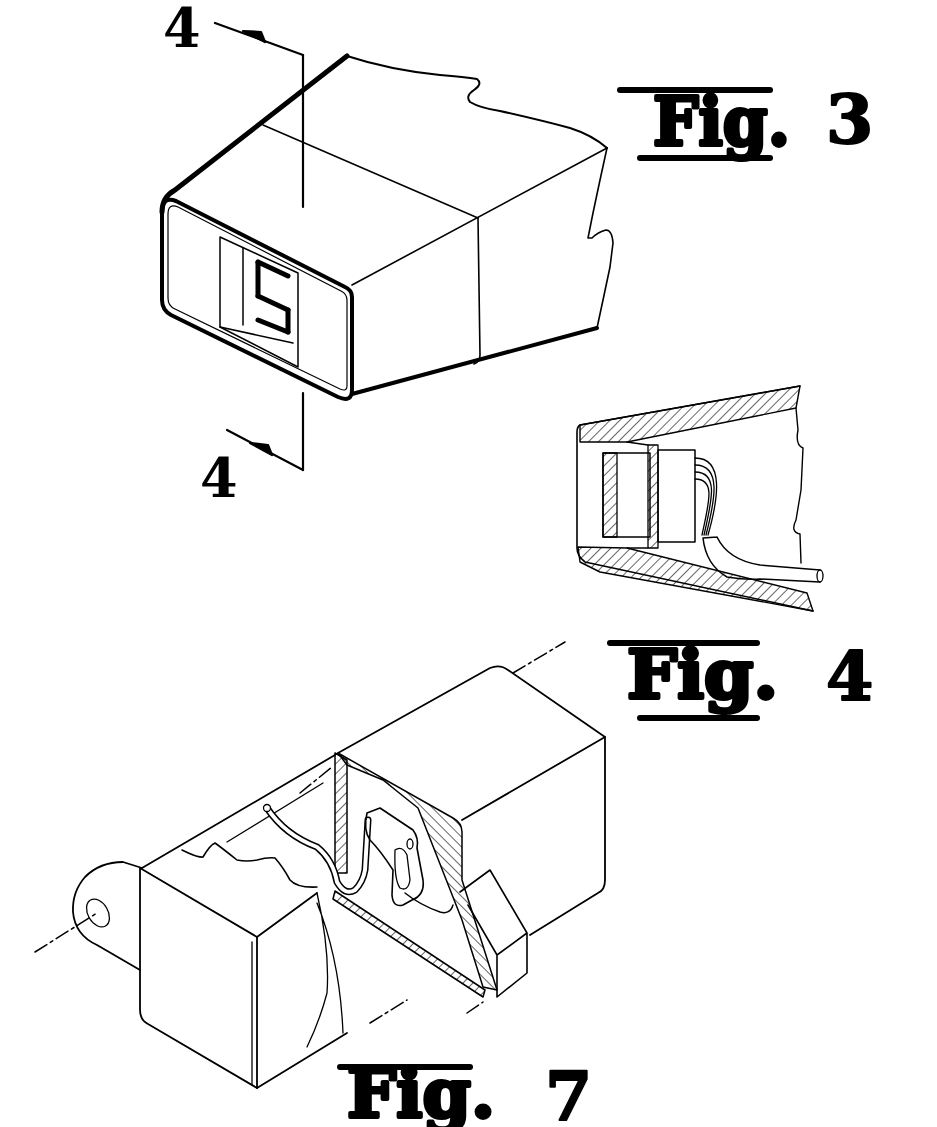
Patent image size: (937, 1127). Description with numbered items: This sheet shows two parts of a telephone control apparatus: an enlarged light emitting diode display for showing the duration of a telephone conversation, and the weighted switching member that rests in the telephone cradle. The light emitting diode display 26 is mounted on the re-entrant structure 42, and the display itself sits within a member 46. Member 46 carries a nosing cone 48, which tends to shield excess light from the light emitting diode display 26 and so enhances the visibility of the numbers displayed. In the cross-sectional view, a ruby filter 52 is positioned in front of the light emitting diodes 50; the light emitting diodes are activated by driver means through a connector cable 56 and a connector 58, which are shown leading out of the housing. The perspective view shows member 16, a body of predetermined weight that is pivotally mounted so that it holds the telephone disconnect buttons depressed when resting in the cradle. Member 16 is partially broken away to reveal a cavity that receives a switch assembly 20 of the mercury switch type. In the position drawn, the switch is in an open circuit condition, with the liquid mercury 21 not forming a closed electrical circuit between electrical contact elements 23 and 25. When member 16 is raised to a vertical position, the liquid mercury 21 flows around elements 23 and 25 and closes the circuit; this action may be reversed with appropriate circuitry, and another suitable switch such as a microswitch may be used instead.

In FIG. 7, the member 16 is at (446, 676).
In FIG. 7, the switch assembly 20 is at (452, 947).
In FIG. 7, the liquid mercury 21 is at (473, 887).
In FIG. 7, the electrical contact element 23 is at (398, 922).
In FIG. 7, the electrical contact element 25 is at (413, 837).
In FIG. 3, the light emitting diode display 26 is at (246, 304).
In FIG. 4, the light emitting diode display 26 is at (583, 500).
In FIG. 3, the re-entrant structure 42 is at (532, 328).
In FIG. 4, the re-entrant structure 42 is at (760, 390).
In FIG. 3, the member 46 is at (430, 362).
In FIG. 4, the nosing cone 48 is at (580, 430).
In FIG. 4, the light emitting diodes 50 is at (598, 570).
In FIG. 4, the ruby filter 52 is at (632, 520).
In FIG. 4, the connector cable 56 is at (807, 563).
In FIG. 4, the connector 58 is at (725, 447).